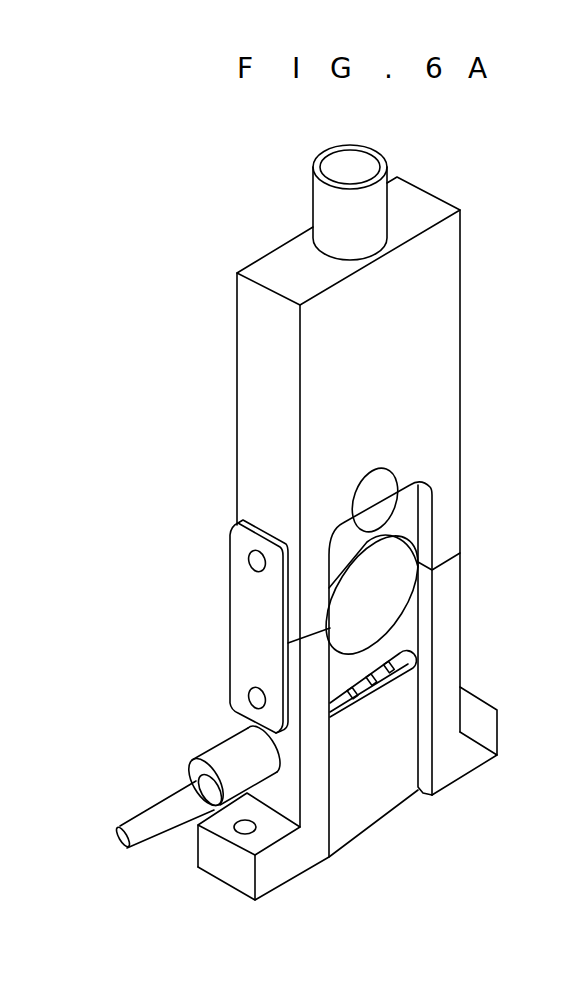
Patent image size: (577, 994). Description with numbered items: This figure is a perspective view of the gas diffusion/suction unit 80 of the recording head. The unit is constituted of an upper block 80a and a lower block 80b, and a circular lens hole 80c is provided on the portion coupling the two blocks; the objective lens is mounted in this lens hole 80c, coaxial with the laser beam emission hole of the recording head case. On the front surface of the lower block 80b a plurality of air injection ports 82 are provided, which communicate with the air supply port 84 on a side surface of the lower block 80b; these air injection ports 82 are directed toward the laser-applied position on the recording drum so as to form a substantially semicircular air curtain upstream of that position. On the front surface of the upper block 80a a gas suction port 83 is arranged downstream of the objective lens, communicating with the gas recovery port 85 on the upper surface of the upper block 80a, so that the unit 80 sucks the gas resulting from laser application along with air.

The gas diffusion/suction unit 80 is at (218, 295).
The upper block 80a is at (443, 388).
The lower block 80b is at (447, 648).
The lens hole 80c is at (388, 592).
The air injection ports 82 is at (392, 671).
The gas suction port 83 is at (390, 475).
The air supply port 84 is at (223, 752).
The gas recovery port 85 is at (353, 168).